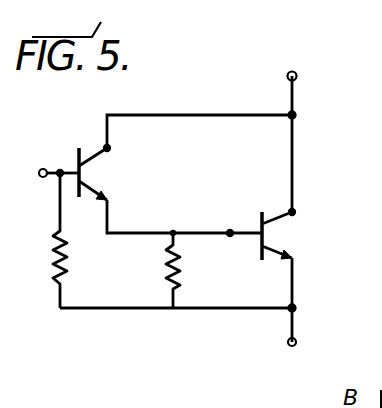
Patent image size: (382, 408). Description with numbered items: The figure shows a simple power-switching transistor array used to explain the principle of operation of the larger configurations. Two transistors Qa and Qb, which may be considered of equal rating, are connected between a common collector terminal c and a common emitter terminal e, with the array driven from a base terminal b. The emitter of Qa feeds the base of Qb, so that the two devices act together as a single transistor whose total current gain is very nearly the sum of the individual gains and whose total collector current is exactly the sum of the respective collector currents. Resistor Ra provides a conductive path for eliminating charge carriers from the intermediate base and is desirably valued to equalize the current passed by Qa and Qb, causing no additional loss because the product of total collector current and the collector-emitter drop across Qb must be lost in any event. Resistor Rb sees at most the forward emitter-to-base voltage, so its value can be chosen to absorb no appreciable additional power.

The transistor Qa is at (107, 173).
The transistor Qb is at (288, 235).
The resistor Ra is at (78, 240).
The resistor Rb is at (192, 270).
The base terminal b is at (39, 154).
The collector terminal c is at (308, 76).
The emitter terminal e is at (284, 353).